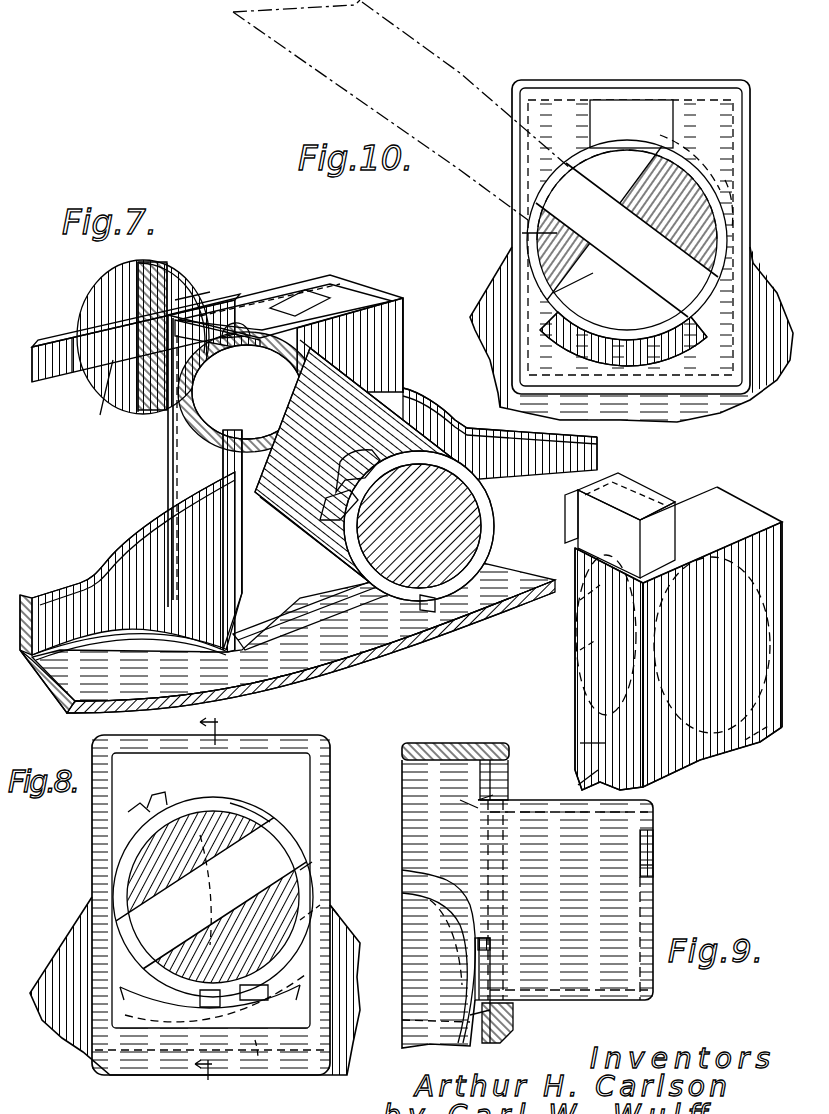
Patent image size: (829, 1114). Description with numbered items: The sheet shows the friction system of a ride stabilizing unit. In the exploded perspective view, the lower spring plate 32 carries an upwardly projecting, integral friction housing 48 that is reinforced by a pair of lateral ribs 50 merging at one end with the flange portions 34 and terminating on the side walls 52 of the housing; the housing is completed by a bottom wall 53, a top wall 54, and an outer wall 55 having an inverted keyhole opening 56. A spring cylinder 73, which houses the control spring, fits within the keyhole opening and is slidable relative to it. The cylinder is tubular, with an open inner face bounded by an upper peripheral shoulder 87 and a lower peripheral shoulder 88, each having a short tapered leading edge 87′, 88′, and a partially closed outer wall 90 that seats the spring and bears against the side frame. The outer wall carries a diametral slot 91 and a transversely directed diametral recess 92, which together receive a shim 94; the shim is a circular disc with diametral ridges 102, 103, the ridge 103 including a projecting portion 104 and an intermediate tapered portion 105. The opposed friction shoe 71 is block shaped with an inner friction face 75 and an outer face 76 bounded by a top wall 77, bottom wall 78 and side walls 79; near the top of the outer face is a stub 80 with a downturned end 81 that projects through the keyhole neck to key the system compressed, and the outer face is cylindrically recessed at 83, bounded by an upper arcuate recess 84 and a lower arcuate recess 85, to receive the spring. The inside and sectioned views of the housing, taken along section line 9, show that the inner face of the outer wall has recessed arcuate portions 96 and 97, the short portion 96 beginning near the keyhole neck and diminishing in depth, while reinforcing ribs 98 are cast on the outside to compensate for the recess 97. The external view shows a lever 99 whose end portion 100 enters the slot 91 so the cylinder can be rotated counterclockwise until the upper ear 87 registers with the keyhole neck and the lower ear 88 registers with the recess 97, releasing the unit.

In FIG. 8, the section line 9- 9 is at (217, 895).
In FIG. 7, the lower spring plate 32 is at (287, 636).
In FIG. 7, the flange portions 34 is at (40, 593).
In FIG. 7, the friction housing 48 is at (299, 274).
In FIG. 10, the friction housing 48 is at (592, 69).
In FIG. 8, the friction housing 48 is at (83, 822).
In FIG. 9, the friction housing 48 is at (401, 742).
In FIG. 7, the lateral ribs 50 is at (133, 520).
In FIG. 8, the lateral ribs 50 is at (70, 940).
In FIG. 9, the lateral ribs 50 is at (430, 967).
In FIG. 7, the side walls 52 is at (403, 345).
In FIG. 8, the side walls 52 is at (325, 835).
In FIG. 9, the side walls 52 is at (420, 790).
In FIG. 7, the bottom wall 53 is at (207, 597).
In FIG. 8, the bottom wall 53 is at (180, 1030).
In FIG. 9, the bottom wall 53 is at (402, 1025).
In FIG. 7, the top wall 54 is at (318, 295).
In FIG. 10, the top wall 54 is at (665, 80).
In FIG. 8, the top wall 54 is at (290, 740).
In FIG. 9, the top wall 54 is at (432, 743).
In FIG. 7, the outer wall 55 is at (327, 347).
In FIG. 10, the outer wall 55 is at (592, 123).
In FIG. 9, the outer wall 55 is at (507, 1030).
In FIG. 7, the inverted keyhole opening 56 is at (307, 360).
In FIG. 10, the inverted keyhole opening 56 is at (727, 205).
In FIG. 7, the friction shoe 71 is at (564, 704).
In FIG. 7, the cylinder 73 is at (400, 428).
In FIG. 10, the cylinder 73 is at (622, 147).
In FIG. 8, the cylinder 73 is at (205, 800).
In FIG. 9, the cylinder 73 is at (513, 803).
In FIG. 7, the inner friction face 75 is at (708, 770).
In FIG. 7, the outer face 76 is at (575, 722).
In FIG. 7, the top wall 77 is at (715, 493).
In FIG. 7, the bottom wall 78 is at (748, 735).
In FIG. 7, the side walls 79 is at (592, 734).
In FIG. 7, the stub 80 is at (640, 490).
In FIG. 7, the downturned end 81 is at (565, 522).
In FIG. 7, the cylindrical recess 83 is at (580, 650).
In FIG. 7, the upper arcuate recess 84 is at (578, 605).
In FIG. 7, the lower arcuate recess 85 is at (673, 644).
In FIG. 7, the upper peripheral shoulder 87 is at (347, 473).
In FIG. 10, the upper peripheral shoulder 87 is at (698, 143).
In FIG. 8, the upper peripheral shoulder 87 is at (148, 800).
In FIG. 9, the upper peripheral shoulder 87 is at (477, 803).
In FIG. 7, the tapered portion 87′ is at (347, 497).
In FIG. 10, the tapered portion 87′ is at (752, 153).
In FIG. 7, the lower peripheral shoulder 88 is at (453, 597).
In FIG. 10, the lower peripheral shoulder 88 is at (532, 287).
In FIG. 8, the lower peripheral shoulder 88 is at (235, 1003).
In FIG. 9, the lower peripheral shoulder 88 is at (473, 998).
In FIG. 7, the tapered portion 88′ is at (480, 538).
In FIG. 8, the tapered portion 88′ is at (340, 910).
In FIG. 9, the tapered portion 88′ is at (488, 944).
In FIG. 10, the outer wall 90 is at (522, 233).
In FIG. 8, the outer wall 90 is at (265, 820).
In FIG. 9, the outer wall 90 is at (653, 903).
In FIG. 8, the diametral slot 91 is at (216, 888).
In FIG. 9, the diametral slot 91 is at (655, 845).
In FIG. 10, the diametral recess 92 is at (633, 192).
In FIG. 8, the diametral recess 92 is at (213, 890).
In FIG. 9, the diametral recess 92 is at (660, 872).
In FIG. 7, the shim 94 is at (180, 297).
In FIG. 7, the recessed arcuate portion 96 is at (218, 350).
In FIG. 8, the recessed arcuate portion 96 is at (167, 800).
In FIG. 9, the recessed arcuate portion 96 is at (493, 793).
In FIG. 7, the recessed arcuate portion 97 is at (257, 468).
In FIG. 10, the recessed arcuate portion 97 is at (628, 365).
In FIG. 8, the recessed arcuate portion 97 is at (175, 995).
In FIG. 9, the recessed arcuate portion 97 is at (473, 1020).
In FIG. 10, the reinforcing ribs 98 is at (697, 340).
In FIG. 8, the reinforcing ribs 98 is at (125, 985).
In FIG. 9, the reinforcing ribs 98 is at (513, 1007).
In FIG. 10, the lever 99 is at (318, 60).
In FIG. 10, the end portion 100 is at (678, 260).
In FIG. 7, the diametral ridge 102 is at (160, 283).
In FIG. 7, the diametral ridge 103 is at (97, 400).
In FIG. 7, the projecting portion 104 is at (43, 343).
In FIG. 7, the tapered portion 105 is at (60, 345).